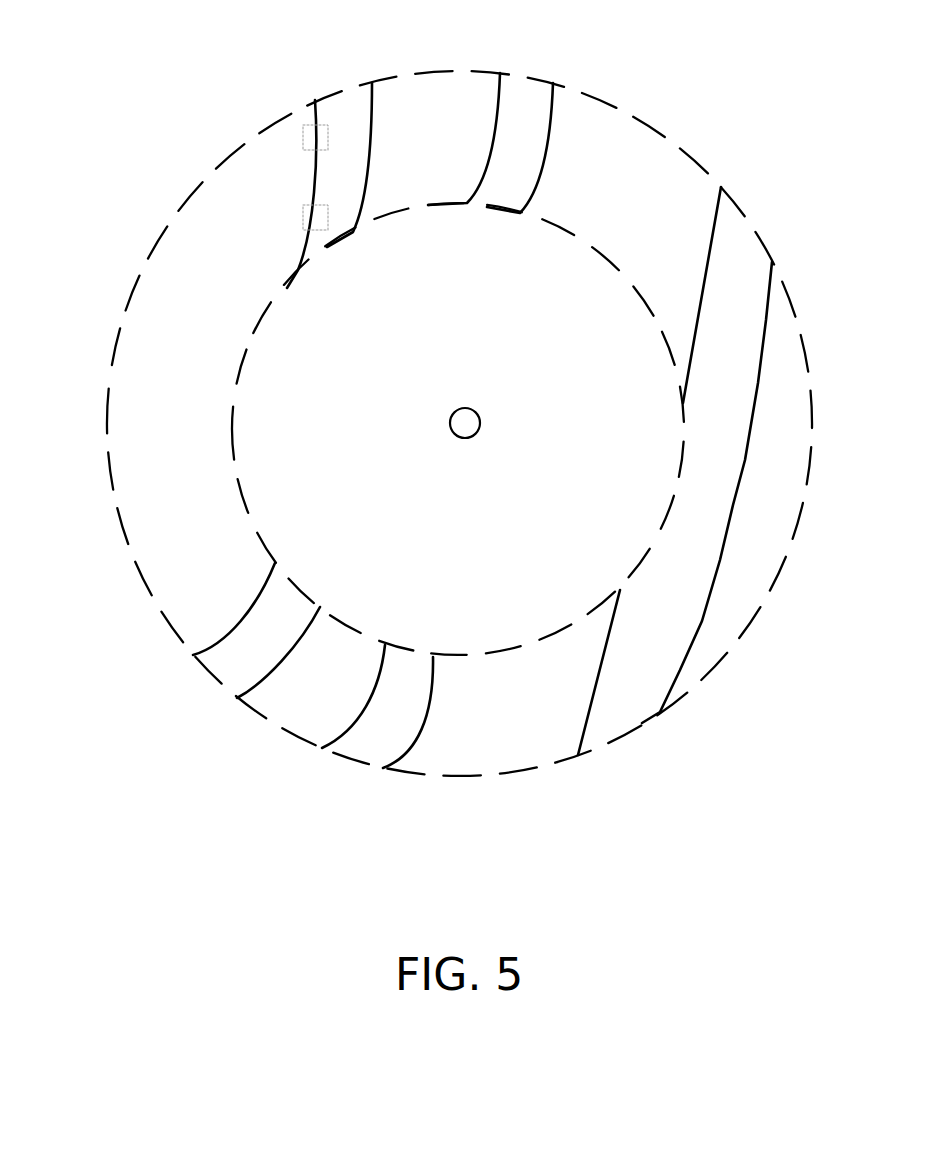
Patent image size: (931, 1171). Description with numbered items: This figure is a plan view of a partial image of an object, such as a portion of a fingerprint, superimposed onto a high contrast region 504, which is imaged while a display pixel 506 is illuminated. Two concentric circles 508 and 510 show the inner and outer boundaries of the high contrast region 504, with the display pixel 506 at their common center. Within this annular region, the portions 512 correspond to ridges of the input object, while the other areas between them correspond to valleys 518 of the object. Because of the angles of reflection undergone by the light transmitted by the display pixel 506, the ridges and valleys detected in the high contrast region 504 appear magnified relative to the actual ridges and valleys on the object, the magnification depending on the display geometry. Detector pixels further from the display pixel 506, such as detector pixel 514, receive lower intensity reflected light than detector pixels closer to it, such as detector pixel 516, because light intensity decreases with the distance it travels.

The high contrast region 504 is at (161, 317).
The display pixel 506 is at (467, 407).
The concentric circle 508 is at (573, 237).
The concentric circle 510 is at (677, 148).
The portions 512 is at (337, 98).
The detector pixel 514 is at (302, 140).
The detector pixel 516 is at (303, 223).
The valleys 518 is at (430, 103).